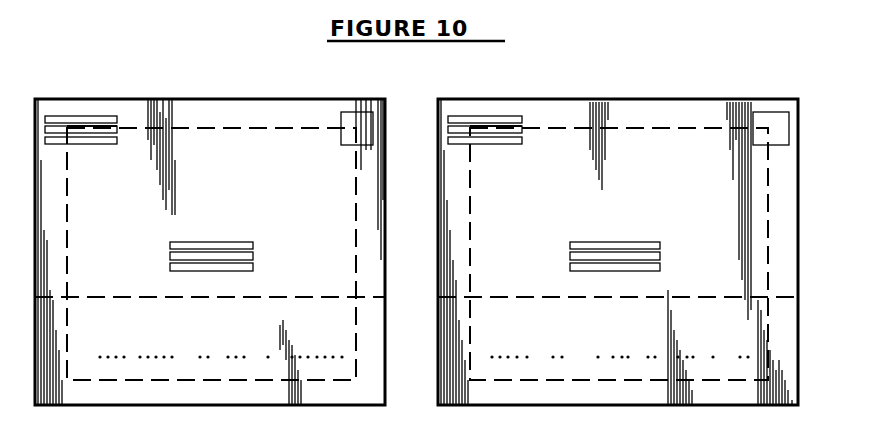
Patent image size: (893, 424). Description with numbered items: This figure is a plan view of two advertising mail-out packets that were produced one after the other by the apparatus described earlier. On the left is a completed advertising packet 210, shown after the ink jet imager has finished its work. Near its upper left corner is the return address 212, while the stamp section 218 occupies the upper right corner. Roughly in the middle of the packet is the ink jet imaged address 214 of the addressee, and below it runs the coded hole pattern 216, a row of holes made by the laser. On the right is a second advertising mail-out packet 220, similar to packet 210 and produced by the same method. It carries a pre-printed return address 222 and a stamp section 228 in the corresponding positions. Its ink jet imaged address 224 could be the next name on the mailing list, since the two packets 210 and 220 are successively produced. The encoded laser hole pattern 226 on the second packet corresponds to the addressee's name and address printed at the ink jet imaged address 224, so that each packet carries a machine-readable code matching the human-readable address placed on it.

The advertising packet 210 is at (222, 98).
The return address 212 is at (93, 141).
The ink jet imaged address 214 is at (217, 243).
The coded hole pattern 216 is at (218, 355).
The stamp section 218 is at (340, 141).
The second advertising mail-out packet 220 is at (620, 98).
The pre-printed return address 222 is at (496, 141).
The ink jet imaged address 224 is at (609, 243).
The encoded laser hole pattern 226 is at (622, 355).
The stamp section 228 is at (753, 145).